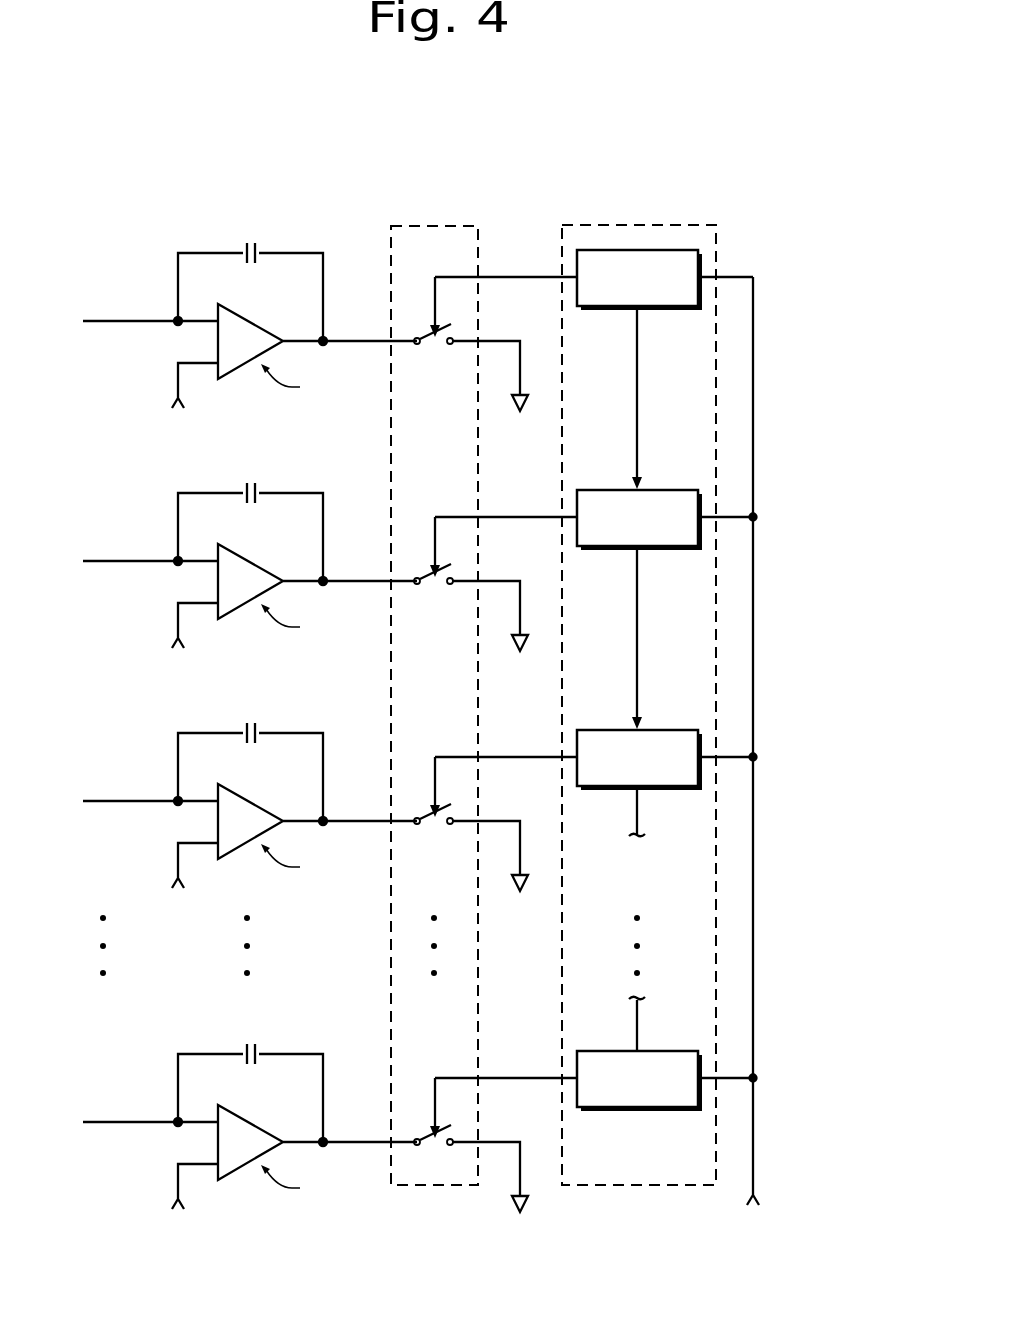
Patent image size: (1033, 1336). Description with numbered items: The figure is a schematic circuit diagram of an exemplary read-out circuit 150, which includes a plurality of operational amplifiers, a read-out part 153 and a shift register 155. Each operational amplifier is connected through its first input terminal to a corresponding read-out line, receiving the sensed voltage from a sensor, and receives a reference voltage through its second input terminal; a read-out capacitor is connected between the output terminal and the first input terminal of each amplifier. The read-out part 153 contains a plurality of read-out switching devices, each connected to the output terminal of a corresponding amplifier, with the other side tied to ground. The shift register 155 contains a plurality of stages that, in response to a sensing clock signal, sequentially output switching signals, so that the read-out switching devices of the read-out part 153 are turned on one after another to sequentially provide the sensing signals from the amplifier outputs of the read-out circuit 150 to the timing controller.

The read-out circuit 150 is at (724, 156).
The read-out part 153 is at (436, 1187).
The shift register 155 is at (641, 1187).